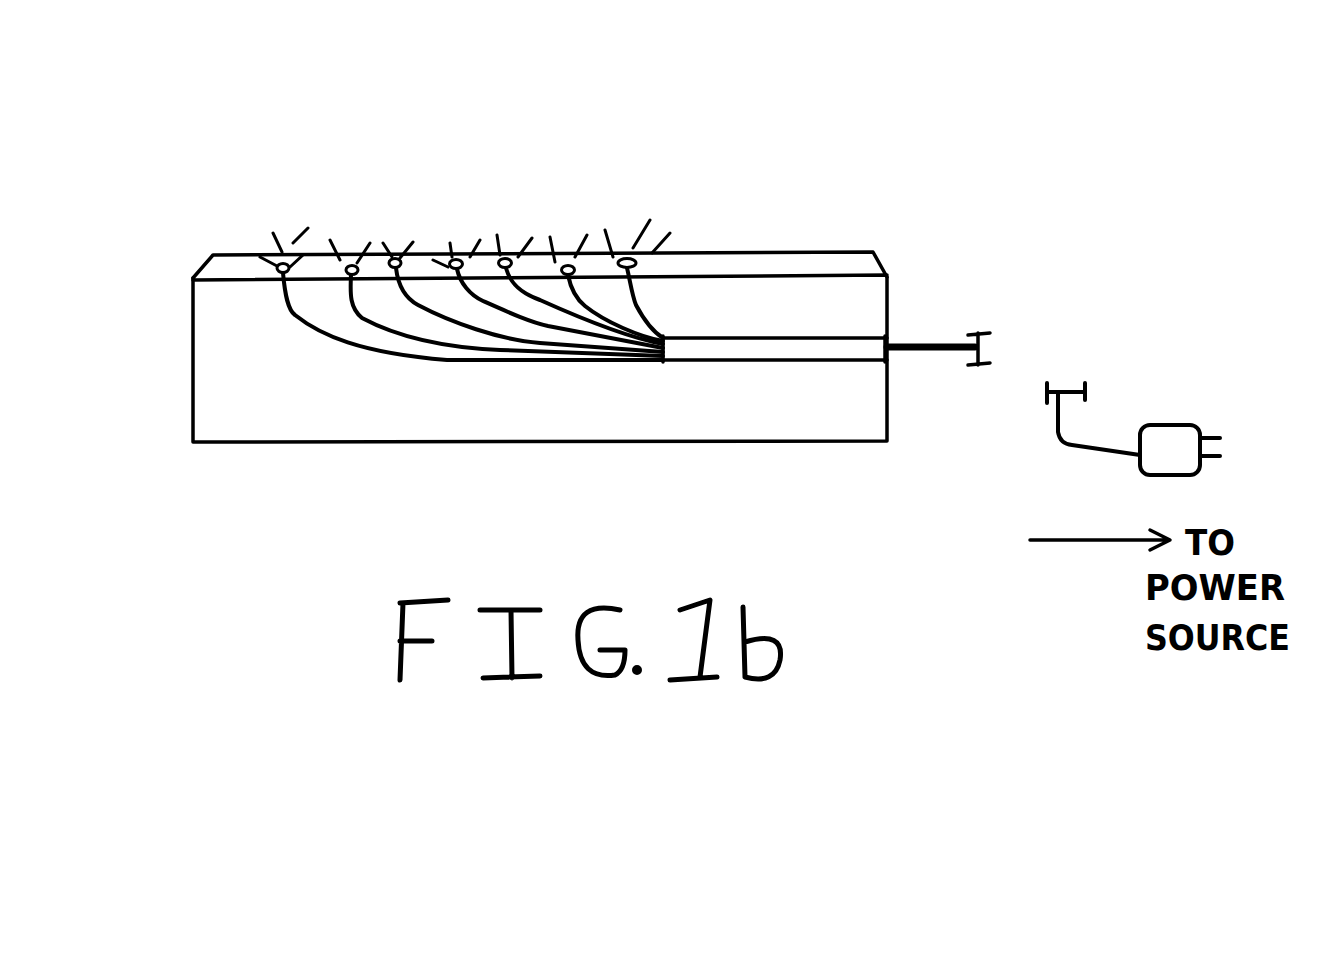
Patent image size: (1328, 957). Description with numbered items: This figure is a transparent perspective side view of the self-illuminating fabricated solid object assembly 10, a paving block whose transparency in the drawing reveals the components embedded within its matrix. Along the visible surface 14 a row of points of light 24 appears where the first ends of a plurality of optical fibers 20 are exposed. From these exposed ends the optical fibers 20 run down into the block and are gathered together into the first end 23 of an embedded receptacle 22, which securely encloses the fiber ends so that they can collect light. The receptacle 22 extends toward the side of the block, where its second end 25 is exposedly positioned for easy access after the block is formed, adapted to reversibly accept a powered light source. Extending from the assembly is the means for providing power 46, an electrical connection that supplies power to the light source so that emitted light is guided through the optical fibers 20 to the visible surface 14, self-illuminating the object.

The self-illuminating fabricated solid object assembly 10 is at (195, 200).
The visible surface 14 is at (232, 268).
The optical fibers 20 is at (300, 317).
The receptacle 22 is at (770, 330).
The first end of receptacle 23 is at (673, 330).
The points of light 24 is at (623, 257).
The second end of receptacle 25 is at (880, 363).
The means for providing power 46 is at (928, 340).